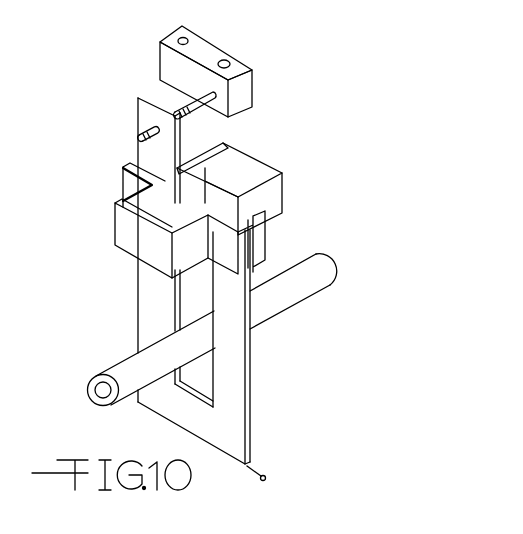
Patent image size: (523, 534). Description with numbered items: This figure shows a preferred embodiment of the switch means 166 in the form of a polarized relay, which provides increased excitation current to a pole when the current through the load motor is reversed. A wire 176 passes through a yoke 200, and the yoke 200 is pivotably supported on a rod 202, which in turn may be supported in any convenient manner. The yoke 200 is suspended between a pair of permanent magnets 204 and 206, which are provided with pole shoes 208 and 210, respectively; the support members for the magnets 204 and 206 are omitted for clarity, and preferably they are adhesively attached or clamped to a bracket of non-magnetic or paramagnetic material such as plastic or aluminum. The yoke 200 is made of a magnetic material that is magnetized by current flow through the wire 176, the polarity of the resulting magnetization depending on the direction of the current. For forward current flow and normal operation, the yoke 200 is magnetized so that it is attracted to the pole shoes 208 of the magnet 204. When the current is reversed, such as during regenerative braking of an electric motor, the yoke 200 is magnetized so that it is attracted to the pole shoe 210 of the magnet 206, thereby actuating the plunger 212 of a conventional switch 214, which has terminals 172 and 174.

The switch means 166 is at (268, 82).
The terminal 172 is at (187, 40).
The terminal 174 is at (229, 62).
The wire 176 is at (318, 272).
The yoke 200 is at (237, 367).
The rod 202 is at (266, 476).
The permanent magnet 204 is at (138, 238).
The permanent magnet 206 is at (257, 167).
The pole shoe 208 is at (137, 182).
The pole shoe 210 is at (223, 143).
The plunger 212 is at (190, 100).
The conventional switch 214 is at (172, 62).